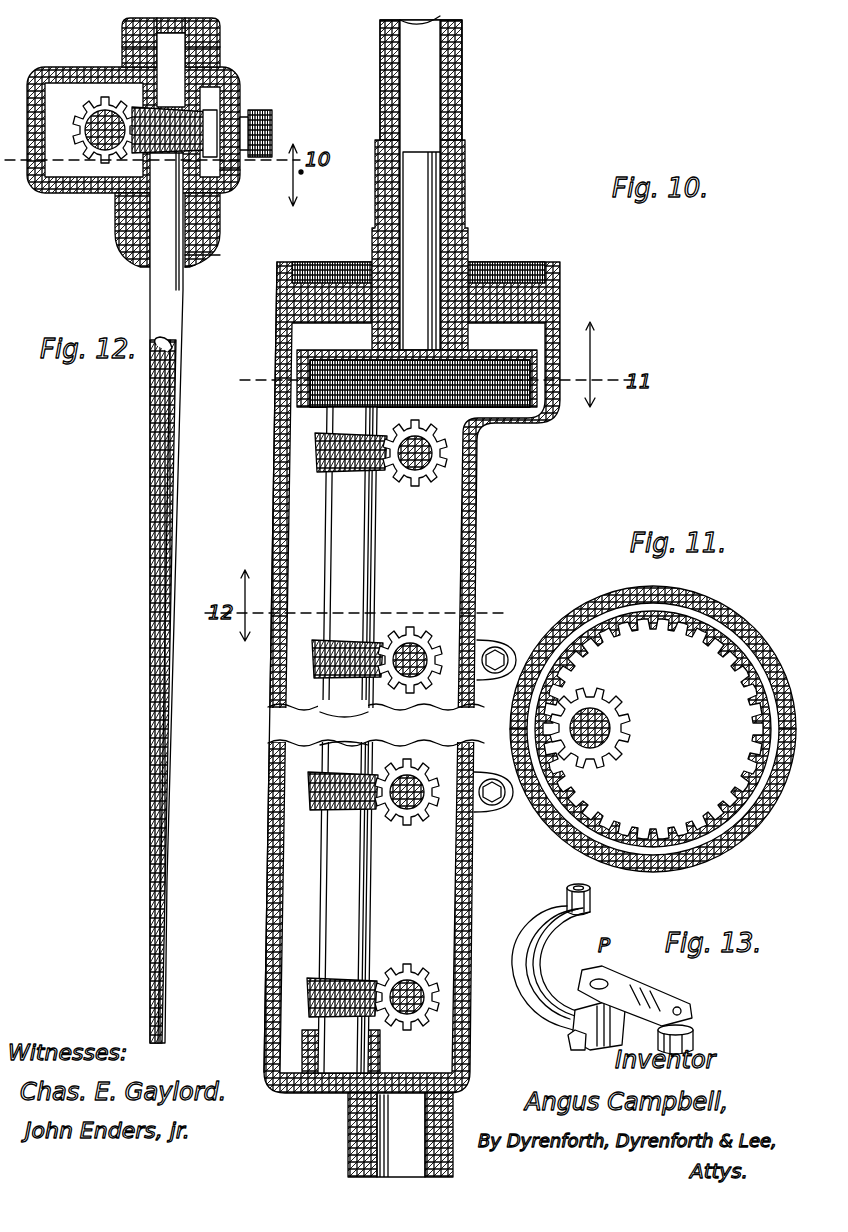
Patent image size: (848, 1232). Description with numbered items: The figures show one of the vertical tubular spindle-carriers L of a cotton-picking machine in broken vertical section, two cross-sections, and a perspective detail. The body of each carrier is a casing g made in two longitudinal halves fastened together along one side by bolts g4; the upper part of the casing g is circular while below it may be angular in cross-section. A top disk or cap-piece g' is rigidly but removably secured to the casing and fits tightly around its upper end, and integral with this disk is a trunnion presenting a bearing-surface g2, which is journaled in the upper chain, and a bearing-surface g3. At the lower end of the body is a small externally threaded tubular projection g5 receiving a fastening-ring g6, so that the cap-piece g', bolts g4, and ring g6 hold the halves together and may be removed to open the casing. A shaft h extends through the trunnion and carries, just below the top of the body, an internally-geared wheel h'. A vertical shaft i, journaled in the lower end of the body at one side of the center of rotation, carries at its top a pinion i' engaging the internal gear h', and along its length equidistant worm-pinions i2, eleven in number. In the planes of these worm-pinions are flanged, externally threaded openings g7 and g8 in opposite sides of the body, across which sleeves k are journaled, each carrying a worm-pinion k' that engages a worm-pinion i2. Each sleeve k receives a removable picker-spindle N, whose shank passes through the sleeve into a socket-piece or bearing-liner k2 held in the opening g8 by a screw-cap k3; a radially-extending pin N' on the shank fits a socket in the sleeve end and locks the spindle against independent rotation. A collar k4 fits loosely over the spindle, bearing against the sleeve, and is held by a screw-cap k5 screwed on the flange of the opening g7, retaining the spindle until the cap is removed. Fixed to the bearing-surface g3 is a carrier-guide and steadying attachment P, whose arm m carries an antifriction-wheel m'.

In FIG. 10, the casing g is at (412, 677).
In FIG. 12, the casing g is at (133, 146).
In FIG. 11, the casing g is at (653, 729).
In FIG. 10, the top disk or cap-piece g' is at (441, 283).
In FIG. 10, the bearing-surface g2 is at (375, 195).
In FIG. 10, the bearing-surface g3 is at (463, 104).
In FIG. 10, the bolts g4 is at (499, 651).
In FIG. 12, the bolts g4 is at (272, 120).
In FIG. 10, the tubular projection g5 is at (455, 1090).
In FIG. 10, the fastening-ring g6 is at (348, 1130).
In FIG. 12, the flanged opening g7 is at (222, 204).
In FIG. 12, the flanged opening g8 is at (220, 55).
In FIG. 10, the shaft h is at (446, 183).
In FIG. 10, the internally-geared wheel h' is at (443, 358).
In FIG. 11, the internally-geared wheel h' is at (653, 707).
In FIG. 10, the vertical shaft i is at (306, 740).
In FIG. 11, the vertical shaft i is at (611, 726).
In FIG. 13, the vertical shaft i is at (545, 969).
In FIG. 10, the pinion i' is at (386, 394).
In FIG. 12, the pinion i' is at (96, 136).
In FIG. 11, the pinion i' is at (597, 718).
In FIG. 13, the pinion i' is at (590, 898).
In FIG. 10, the worm-pinions i2 is at (330, 455).
In FIG. 12, the worm-pinions i2 is at (98, 112).
In FIG. 12, the sleeve k is at (241, 178).
In FIG. 10, the worm-pinion k' is at (373, 799).
In FIG. 12, the worm-pinion k' is at (239, 116).
In FIG. 12, the socket-piece or bearing-liner k2 is at (210, 40).
In FIG. 12, the screw-cap k3 is at (125, 36).
In FIG. 12, the collar k4 is at (196, 261).
In FIG. 12, the screw-cap k5 is at (130, 246).
In FIG. 10, the picker-spindle N is at (411, 725).
In FIG. 12, the picker-spindle N is at (144, 598).
In FIG. 12, the radially-extending pin N' is at (208, 226).
In FIG. 10, the spindle-carrier L is at (268, 688).
In FIG. 13, the arm m is at (636, 996).
In FIG. 13, the antifriction-wheel m' is at (697, 1035).
In FIG. 13, the carrier-guide and steadying attachment P is at (596, 1025).